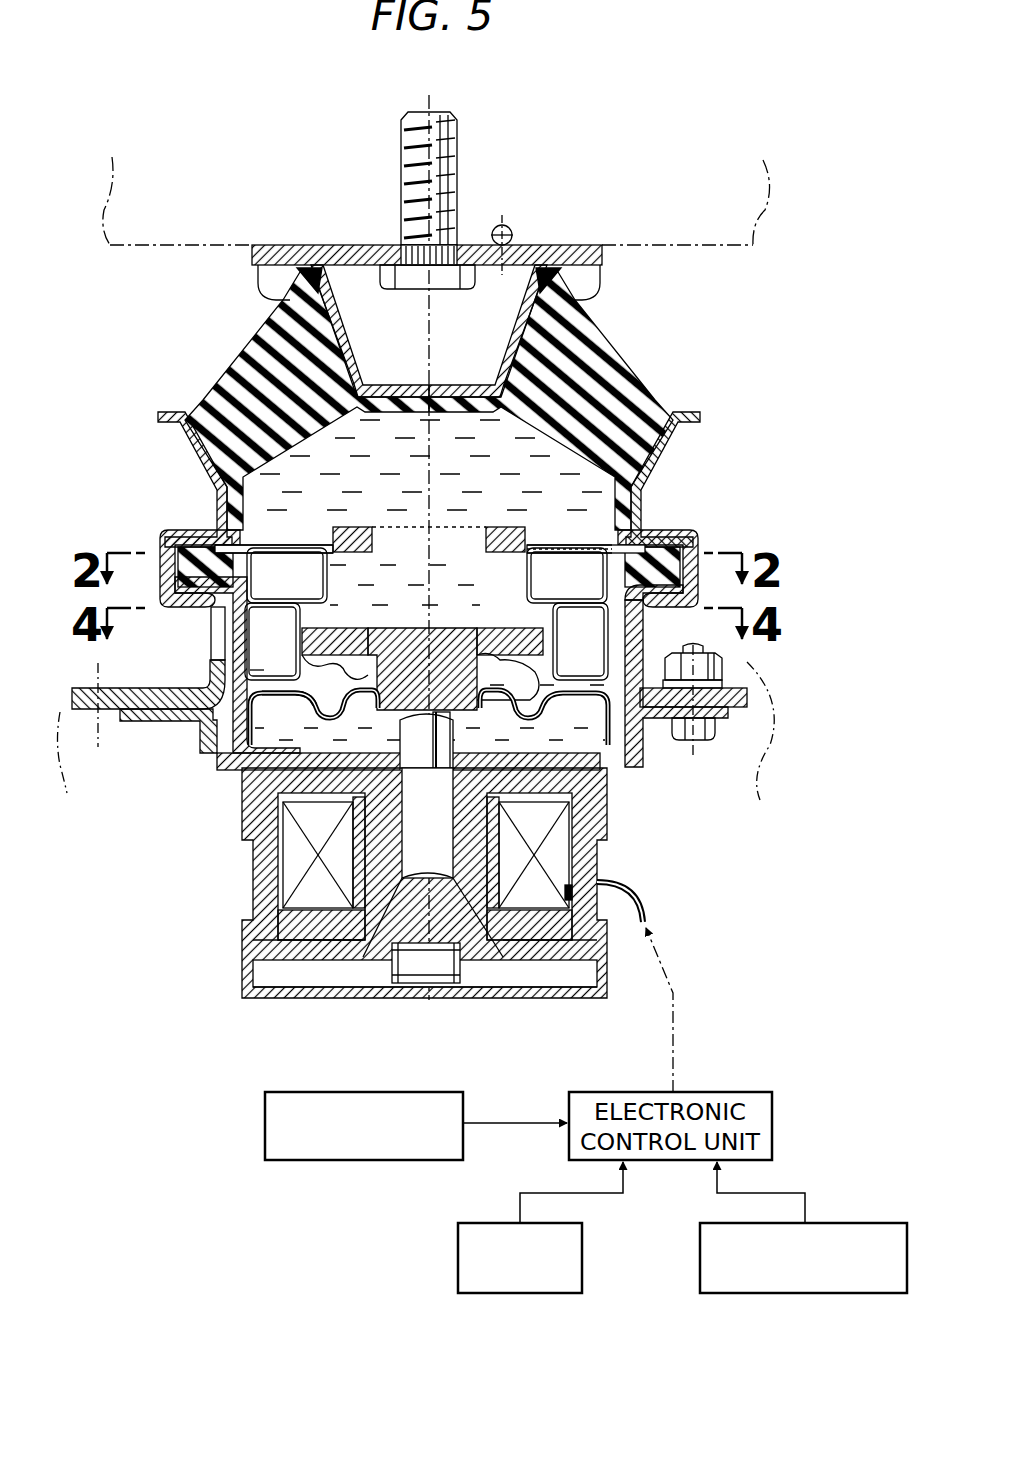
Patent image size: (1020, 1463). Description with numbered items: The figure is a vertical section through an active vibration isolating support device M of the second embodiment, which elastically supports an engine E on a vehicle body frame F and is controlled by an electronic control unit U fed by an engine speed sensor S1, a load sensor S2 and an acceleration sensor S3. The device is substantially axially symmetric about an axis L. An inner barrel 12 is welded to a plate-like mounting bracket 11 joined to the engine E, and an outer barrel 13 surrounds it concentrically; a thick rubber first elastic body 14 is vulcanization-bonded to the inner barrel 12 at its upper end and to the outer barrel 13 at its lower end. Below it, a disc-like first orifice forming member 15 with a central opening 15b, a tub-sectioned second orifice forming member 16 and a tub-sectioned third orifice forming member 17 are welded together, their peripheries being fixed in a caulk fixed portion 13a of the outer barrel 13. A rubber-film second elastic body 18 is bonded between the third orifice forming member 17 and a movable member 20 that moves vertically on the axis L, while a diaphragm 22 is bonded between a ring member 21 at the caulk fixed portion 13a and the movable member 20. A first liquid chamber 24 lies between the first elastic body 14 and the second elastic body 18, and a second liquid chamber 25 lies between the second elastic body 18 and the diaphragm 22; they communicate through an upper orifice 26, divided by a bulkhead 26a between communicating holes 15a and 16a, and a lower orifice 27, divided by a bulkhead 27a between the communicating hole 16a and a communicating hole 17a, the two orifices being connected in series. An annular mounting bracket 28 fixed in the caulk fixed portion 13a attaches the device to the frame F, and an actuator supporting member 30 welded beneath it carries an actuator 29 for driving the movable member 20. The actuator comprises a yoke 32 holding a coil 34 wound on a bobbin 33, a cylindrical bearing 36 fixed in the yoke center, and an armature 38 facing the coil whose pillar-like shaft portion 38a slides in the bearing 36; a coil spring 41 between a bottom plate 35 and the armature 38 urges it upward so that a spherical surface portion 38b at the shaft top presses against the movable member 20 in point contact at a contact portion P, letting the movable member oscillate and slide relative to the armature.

The mounting bracket 11 is at (580, 246).
The inner barrel 12 is at (345, 336).
The outer barrel 13 is at (195, 452).
The caulk fixed portion 13a is at (172, 540).
The first elastic body 14 is at (247, 347).
The first orifice forming member 15 is at (347, 522).
The communicating hole 15a is at (577, 540).
The opening 15b is at (385, 537).
The second orifice forming member 16 is at (271, 598).
The communicating hole 16a is at (567, 575).
The third orifice forming member 17 is at (268, 672).
The communicating hole 17a is at (580, 676).
The second elastic body 18 is at (333, 640).
The movable member 20 is at (392, 715).
The ring member 21 is at (162, 573).
The diaphragm 22 is at (313, 715).
The first liquid chamber 24 is at (430, 465).
The second liquid chamber 25 is at (480, 675).
The upper orifice 26 is at (271, 550).
The bulkhead 26a is at (538, 524).
The lower orifice 27 is at (262, 626).
The bulkhead 27a is at (600, 650).
The mounting bracket 28 is at (150, 688).
The actuator 29 is at (218, 1002).
The actuator supporting member 30 is at (205, 752).
The yoke 32 is at (250, 890).
The bobbin 33 is at (300, 941).
The coil 34 is at (288, 858).
The bottom plate 35 is at (287, 990).
The bearing 36 is at (405, 797).
The armature 38 is at (328, 975).
The shaft portion 38a is at (450, 748).
The spherical surface portion 38b is at (470, 708).
The coil spring 41 is at (392, 984).
The axis L is at (436, 105).
The engine E is at (748, 248).
The active vibration isolating support device M is at (685, 482).
The vehicle body frame F is at (707, 722).
The contact portion P is at (426, 745).
The electronic control unit U is at (738, 1092).
The engine speed sensor S1 is at (358, 1160).
The load sensor S2 is at (458, 1262).
The acceleration sensor S3 is at (868, 1223).